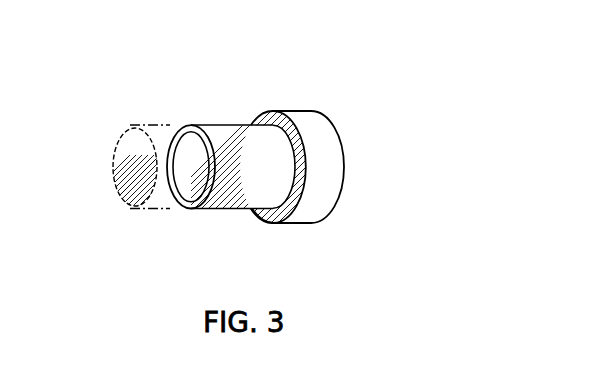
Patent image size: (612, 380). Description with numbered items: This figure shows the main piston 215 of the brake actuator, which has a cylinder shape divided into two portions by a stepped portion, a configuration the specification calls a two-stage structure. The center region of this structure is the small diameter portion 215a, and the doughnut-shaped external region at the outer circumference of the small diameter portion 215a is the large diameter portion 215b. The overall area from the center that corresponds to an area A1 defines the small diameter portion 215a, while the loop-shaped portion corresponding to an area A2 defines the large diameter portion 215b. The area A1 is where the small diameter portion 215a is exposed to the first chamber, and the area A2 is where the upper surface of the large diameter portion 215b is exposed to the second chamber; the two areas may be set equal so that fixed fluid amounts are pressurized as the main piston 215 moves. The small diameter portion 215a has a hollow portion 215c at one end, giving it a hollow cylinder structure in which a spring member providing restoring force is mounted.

The main piston 215 is at (264, 151).
The small diameter portion 215a is at (256, 122).
The large diameter portion 215b is at (313, 108).
The hollow portion 215c is at (201, 188).
The area A1 is at (124, 151).
The area A2 is at (262, 224).